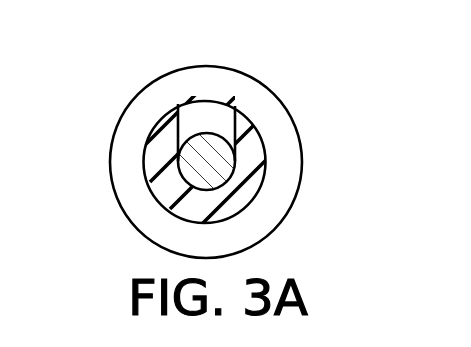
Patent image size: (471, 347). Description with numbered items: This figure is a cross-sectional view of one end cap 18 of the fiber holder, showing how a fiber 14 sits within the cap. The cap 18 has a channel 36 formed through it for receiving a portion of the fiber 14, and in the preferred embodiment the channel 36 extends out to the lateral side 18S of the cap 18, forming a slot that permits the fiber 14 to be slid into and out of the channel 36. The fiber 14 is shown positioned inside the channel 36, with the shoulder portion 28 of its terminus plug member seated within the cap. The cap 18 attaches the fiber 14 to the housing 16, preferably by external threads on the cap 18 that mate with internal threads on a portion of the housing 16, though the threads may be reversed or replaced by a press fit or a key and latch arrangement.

The fiber 14 is at (153, 190).
The shoulder portion 28 is at (214, 97).
The end cap 18 is at (266, 188).
The lateral side 18S is at (237, 106).
The channel 36 is at (258, 130).
The housing 16 is at (243, 83).